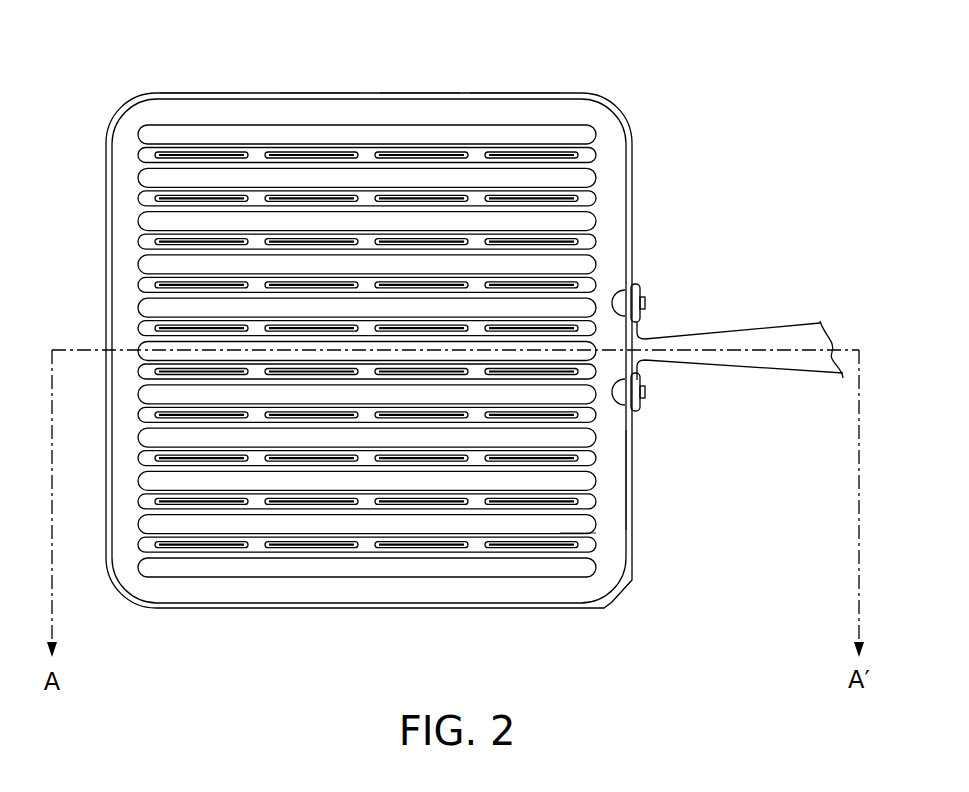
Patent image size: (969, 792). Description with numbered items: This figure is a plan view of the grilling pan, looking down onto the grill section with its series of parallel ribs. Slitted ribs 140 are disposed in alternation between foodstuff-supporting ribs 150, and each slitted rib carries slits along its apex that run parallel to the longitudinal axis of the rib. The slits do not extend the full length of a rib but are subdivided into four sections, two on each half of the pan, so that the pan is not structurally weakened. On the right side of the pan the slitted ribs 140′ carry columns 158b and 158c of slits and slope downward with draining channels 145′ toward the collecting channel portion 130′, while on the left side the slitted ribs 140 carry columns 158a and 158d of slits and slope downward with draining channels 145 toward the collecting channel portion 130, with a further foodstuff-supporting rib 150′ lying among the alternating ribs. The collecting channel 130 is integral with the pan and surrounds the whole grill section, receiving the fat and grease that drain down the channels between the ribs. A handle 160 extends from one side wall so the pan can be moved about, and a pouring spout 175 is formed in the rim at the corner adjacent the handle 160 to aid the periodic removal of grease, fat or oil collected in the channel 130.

The grease-collecting channel 130 is at (368, 93).
The collecting channel portion 130′ is at (625, 490).
The slitted rib 140 is at (140, 372).
The slitted rib 140′ is at (592, 546).
The draining channel 145 is at (146, 352).
The draining channel 145′ is at (594, 537).
The foodstuff-supporting rib 150 is at (595, 137).
The foodstuff-supporting rib 150′ is at (140, 526).
The column of slits 158a is at (320, 85).
The column of slits 158b is at (418, 85).
The column of slits 158c is at (515, 93).
The column of slits 158d is at (221, 96).
The handle 160 is at (748, 330).
The pouring spout 175 is at (618, 596).